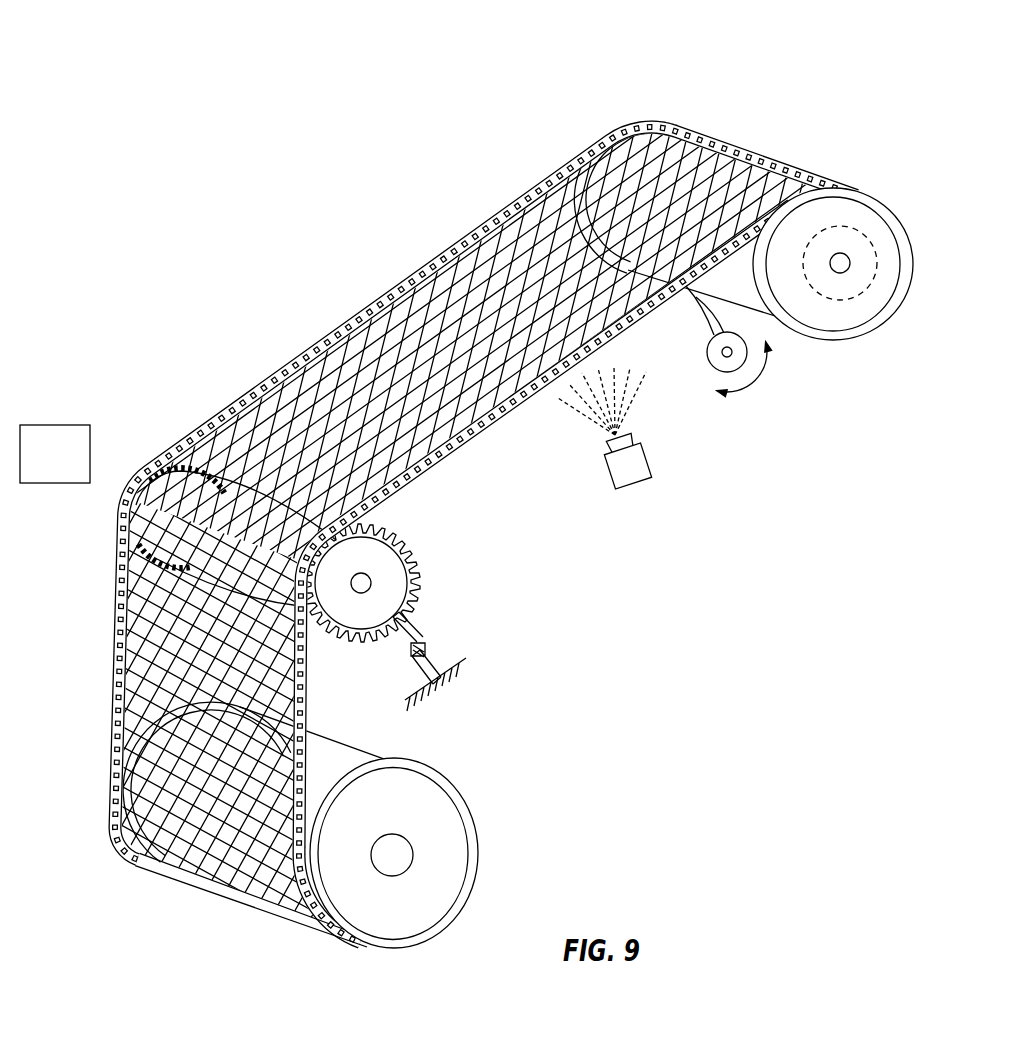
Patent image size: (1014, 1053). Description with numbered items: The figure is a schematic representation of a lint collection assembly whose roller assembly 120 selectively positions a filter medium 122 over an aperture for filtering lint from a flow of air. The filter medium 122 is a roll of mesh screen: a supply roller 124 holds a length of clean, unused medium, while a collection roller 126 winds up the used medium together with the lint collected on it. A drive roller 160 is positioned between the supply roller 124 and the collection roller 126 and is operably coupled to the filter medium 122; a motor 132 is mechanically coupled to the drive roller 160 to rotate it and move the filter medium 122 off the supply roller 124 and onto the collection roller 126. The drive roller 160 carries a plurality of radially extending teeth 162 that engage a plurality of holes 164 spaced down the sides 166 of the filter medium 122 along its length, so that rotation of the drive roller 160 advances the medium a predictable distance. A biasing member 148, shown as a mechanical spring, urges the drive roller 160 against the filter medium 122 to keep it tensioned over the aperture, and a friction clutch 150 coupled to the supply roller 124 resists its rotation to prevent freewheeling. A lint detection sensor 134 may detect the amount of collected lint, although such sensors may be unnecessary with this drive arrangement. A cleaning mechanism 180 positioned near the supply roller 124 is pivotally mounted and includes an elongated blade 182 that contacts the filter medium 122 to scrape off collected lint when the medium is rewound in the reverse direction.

The roller assembly 120 is at (286, 60).
The filter medium 122 is at (545, 258).
The supply roller 124 is at (857, 207).
The collection roller 126 is at (440, 846).
The motor 132 is at (120, 497).
The lint detection sensor 134 is at (632, 490).
The biasing member 148 is at (414, 647).
The friction clutch 150 is at (862, 300).
The drive roller 160 is at (382, 590).
The teeth 162 is at (417, 582).
The holes 164 is at (447, 252).
The sides 166 is at (320, 328).
The cleaning mechanism 180 is at (762, 334).
The elongated blade 182 is at (703, 330).